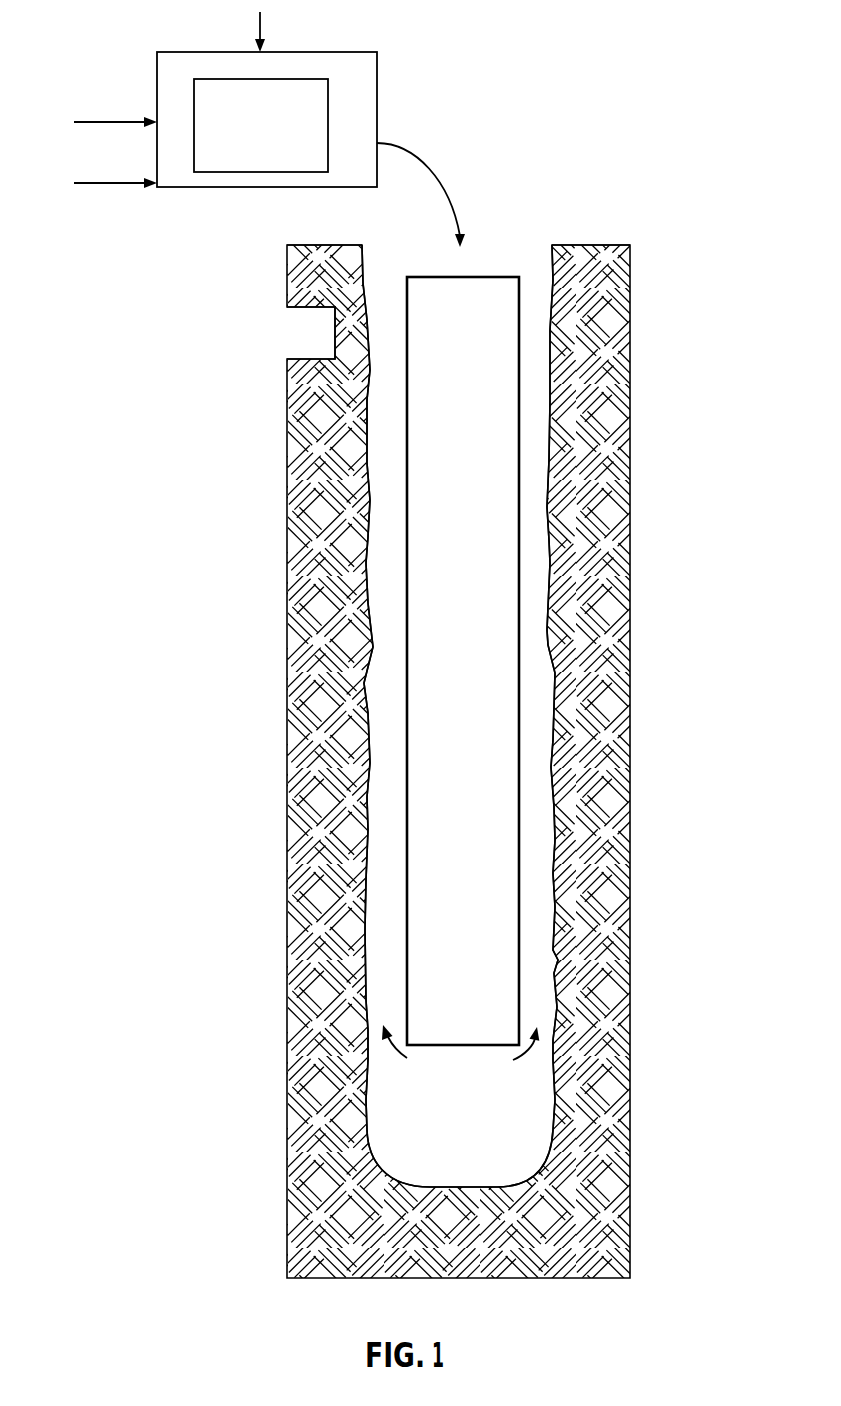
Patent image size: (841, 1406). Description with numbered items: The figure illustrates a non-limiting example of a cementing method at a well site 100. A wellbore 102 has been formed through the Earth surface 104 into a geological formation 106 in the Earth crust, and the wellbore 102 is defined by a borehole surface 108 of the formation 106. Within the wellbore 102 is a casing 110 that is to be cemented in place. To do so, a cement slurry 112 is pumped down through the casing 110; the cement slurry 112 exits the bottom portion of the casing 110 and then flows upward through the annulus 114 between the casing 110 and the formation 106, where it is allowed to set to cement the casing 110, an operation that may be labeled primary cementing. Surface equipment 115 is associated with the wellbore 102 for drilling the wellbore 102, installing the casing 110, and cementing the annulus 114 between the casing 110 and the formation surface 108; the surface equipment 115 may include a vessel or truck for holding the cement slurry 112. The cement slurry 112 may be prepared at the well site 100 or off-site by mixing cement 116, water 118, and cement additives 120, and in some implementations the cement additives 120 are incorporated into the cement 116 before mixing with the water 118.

The well site 100 is at (706, 143).
The wellbore 102 is at (548, 513).
The Earth surface 104 is at (362, 245).
The geological formation 106 is at (315, 346).
The borehole surface 108 is at (367, 440).
The casing 110 is at (518, 642).
The cement slurry 112 is at (293, 79).
The annulus 114 is at (382, 688).
The surface equipment 115 is at (355, 52).
The cement 116 is at (118, 120).
The water 118 is at (258, 30).
The cement additive 120 is at (120, 181).